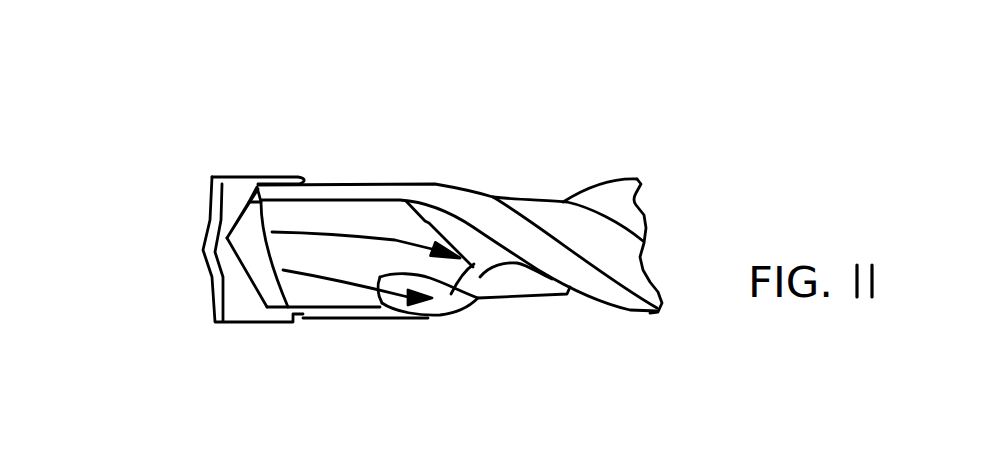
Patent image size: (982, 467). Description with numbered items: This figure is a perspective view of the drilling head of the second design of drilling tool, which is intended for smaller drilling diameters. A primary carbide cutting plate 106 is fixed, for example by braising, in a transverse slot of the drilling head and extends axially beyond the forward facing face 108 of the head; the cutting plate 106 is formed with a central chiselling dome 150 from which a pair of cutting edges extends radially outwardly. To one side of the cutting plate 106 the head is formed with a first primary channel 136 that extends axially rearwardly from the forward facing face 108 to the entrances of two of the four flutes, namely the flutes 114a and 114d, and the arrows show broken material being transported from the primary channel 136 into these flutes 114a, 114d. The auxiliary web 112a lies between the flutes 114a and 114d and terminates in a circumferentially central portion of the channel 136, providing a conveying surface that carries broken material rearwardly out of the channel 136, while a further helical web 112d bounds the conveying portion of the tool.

The central chiselling dome 150 is at (200, 250).
The primary carbide cutting plate 106 is at (243, 307).
The forward facing face 108 is at (250, 202).
The first primary channel 136 is at (322, 213).
The helical web 112d is at (400, 192).
The helical flute 114a is at (452, 300).
The helical flute 114d is at (473, 267).
The auxiliary web 112a is at (525, 295).